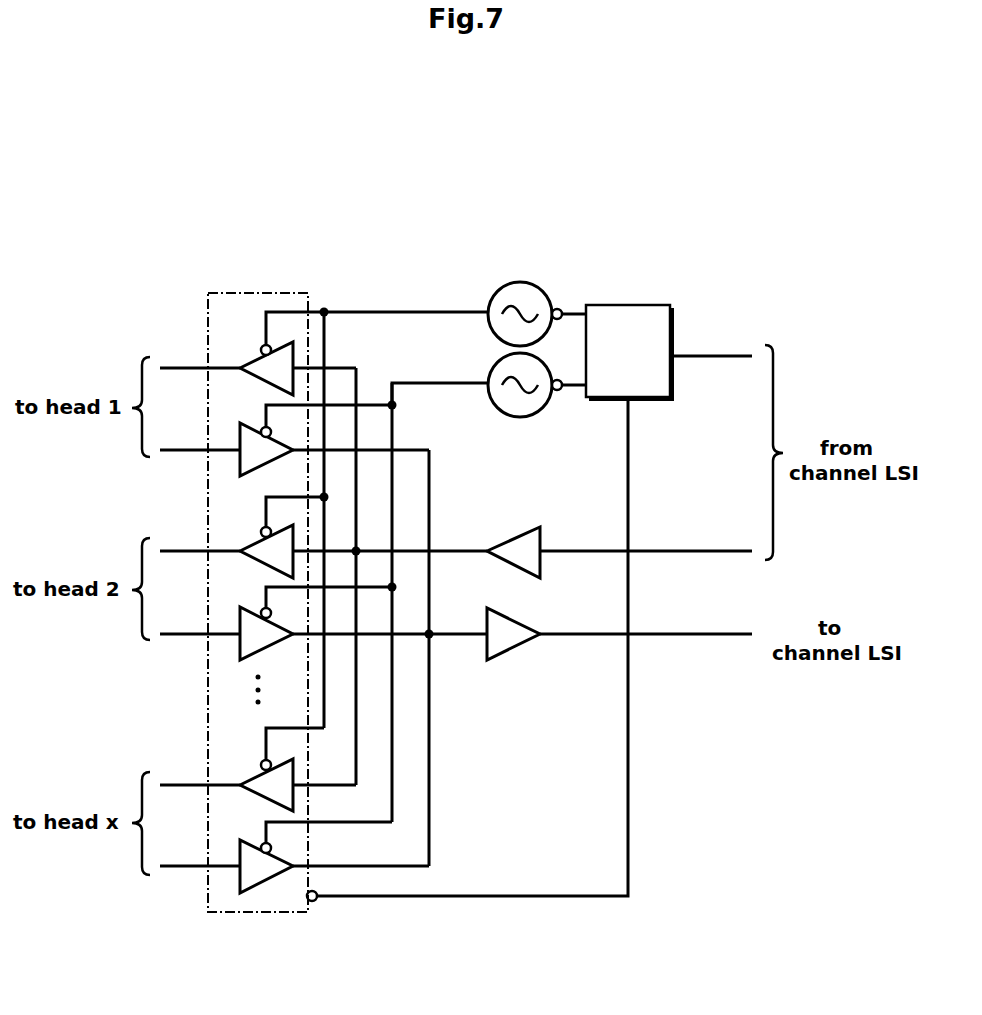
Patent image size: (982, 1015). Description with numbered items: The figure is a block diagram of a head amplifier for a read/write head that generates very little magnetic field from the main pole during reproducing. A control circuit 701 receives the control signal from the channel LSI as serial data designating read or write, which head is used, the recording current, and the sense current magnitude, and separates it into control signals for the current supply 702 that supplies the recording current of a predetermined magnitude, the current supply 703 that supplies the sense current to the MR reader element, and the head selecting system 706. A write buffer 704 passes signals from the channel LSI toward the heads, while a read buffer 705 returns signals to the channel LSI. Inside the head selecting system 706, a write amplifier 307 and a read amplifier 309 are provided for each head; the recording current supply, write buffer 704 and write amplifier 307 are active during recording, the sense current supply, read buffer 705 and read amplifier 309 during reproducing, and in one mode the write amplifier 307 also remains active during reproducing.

The control circuit 701 is at (640, 305).
The current supply 702 is at (493, 300).
The current supply 703 is at (505, 407).
The write buffer 704 is at (500, 540).
The read buffer 705 is at (492, 655).
The head selecting system 706 is at (257, 912).
The write amplifier 307 is at (257, 366).
The read amplifier 309 is at (246, 458).